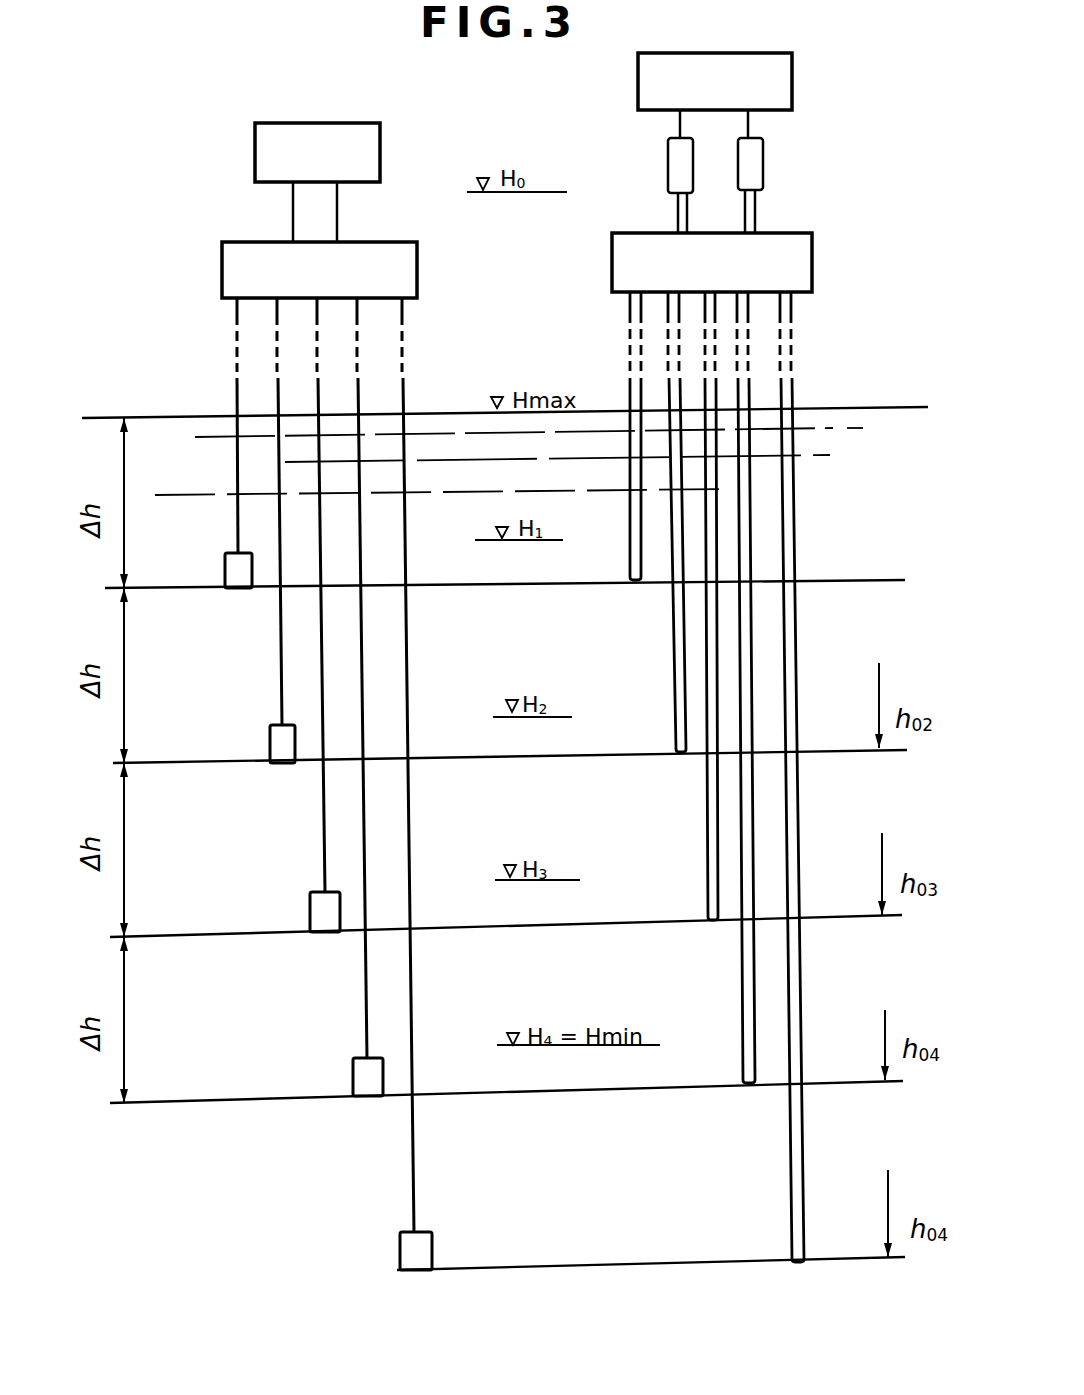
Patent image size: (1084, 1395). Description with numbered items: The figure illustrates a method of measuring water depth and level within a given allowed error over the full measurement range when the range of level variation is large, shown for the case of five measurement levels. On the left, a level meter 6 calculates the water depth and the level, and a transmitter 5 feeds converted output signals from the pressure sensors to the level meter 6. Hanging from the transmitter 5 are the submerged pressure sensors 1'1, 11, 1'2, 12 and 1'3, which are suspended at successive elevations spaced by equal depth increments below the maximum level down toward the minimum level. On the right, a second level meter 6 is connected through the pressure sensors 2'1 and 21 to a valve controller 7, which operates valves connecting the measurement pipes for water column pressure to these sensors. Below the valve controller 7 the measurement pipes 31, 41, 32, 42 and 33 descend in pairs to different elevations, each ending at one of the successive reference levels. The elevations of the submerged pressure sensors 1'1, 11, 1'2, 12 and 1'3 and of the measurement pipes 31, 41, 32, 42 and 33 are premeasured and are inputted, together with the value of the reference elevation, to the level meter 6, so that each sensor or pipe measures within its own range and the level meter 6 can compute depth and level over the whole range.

The level meter 6 is at (523, 117).
The transmitter 5 is at (319, 240).
The valve controller 7 is at (712, 262).
The resistor 2'1 is at (658, 171).
The pressure sensor 21 is at (773, 171).
The float switch 1'1 is at (214, 463).
The submerged pressure sensor 11 is at (280, 747).
The float switch 1'2 is at (293, 641).
The submerged pressure sensor 12 is at (357, 1087).
The submerged pressure sensor 1'3 is at (373, 796).
The electrode 31 is at (638, 505).
The measurement pipe for water column pressure 41 is at (678, 655).
The measurement pipe for water column pressure 32 is at (713, 822).
The measurement pipe for water column pressure 42 is at (747, 975).
The measurement pipe for water column pressure 33 is at (793, 1152).